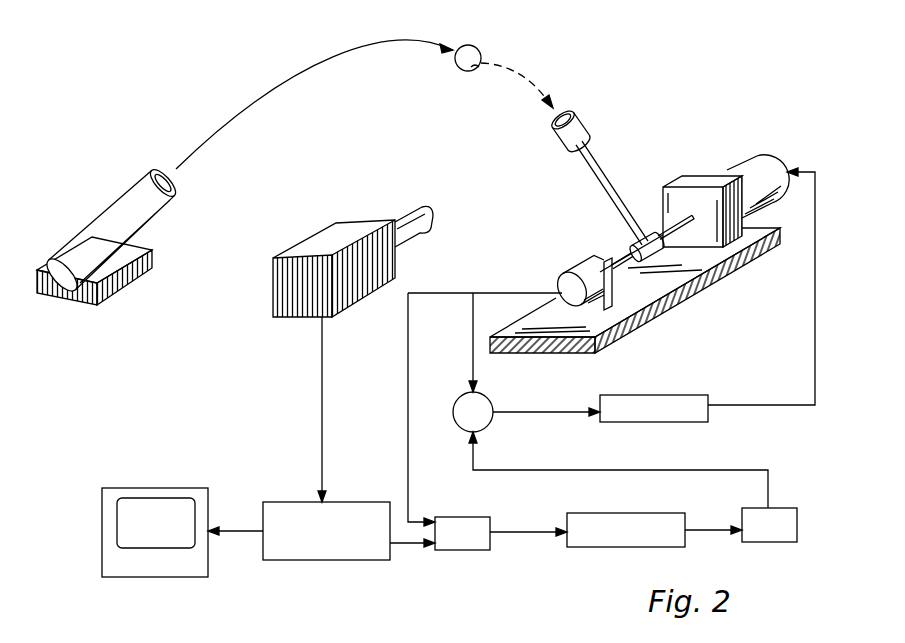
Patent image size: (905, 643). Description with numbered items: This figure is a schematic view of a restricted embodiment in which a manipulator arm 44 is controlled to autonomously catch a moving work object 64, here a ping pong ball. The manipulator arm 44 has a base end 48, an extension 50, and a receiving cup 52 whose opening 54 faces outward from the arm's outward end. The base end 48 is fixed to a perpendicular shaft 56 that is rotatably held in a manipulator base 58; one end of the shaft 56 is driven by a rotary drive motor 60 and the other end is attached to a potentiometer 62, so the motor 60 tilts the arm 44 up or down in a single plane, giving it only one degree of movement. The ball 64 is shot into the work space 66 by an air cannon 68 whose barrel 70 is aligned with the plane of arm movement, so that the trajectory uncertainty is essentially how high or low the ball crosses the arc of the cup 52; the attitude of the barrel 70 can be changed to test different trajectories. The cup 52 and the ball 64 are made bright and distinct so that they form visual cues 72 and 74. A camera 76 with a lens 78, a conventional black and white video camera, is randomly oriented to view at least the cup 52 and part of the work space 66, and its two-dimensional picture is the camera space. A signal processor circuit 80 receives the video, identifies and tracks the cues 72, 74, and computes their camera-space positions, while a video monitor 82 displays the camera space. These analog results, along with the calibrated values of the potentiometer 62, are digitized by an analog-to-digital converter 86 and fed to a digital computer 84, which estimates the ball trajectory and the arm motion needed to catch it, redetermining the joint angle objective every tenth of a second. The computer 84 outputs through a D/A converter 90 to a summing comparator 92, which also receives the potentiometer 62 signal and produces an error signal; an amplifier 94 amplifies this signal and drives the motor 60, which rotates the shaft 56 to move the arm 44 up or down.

The manipulator arm 44 is at (615, 152).
The base end 48 is at (623, 267).
The extension 50 is at (608, 177).
The receiving cup 52 is at (602, 106).
The opening 54 is at (563, 112).
The perpendicular shaft 56 is at (628, 256).
The manipulator base 58 is at (612, 270).
The rotary drive motor 60 is at (749, 162).
The potentiometer 62 is at (590, 264).
The work object 64 is at (481, 33).
The work space 66 is at (458, 146).
The air cannon 68 is at (78, 228).
The barrel 70 is at (133, 186).
The visual cue 72 is at (573, 150).
The visual cue 74 is at (472, 72).
The camera 76 is at (361, 214).
The lens 78 is at (418, 207).
The signal processor circuit 80 is at (345, 562).
The video monitor 82 is at (178, 577).
The digital computer 84 is at (613, 547).
The analog-to-digital converter 86 is at (480, 550).
The D/A converter 90 is at (777, 508).
The summing comparator 92 is at (489, 393).
The amplifier 94 is at (647, 395).